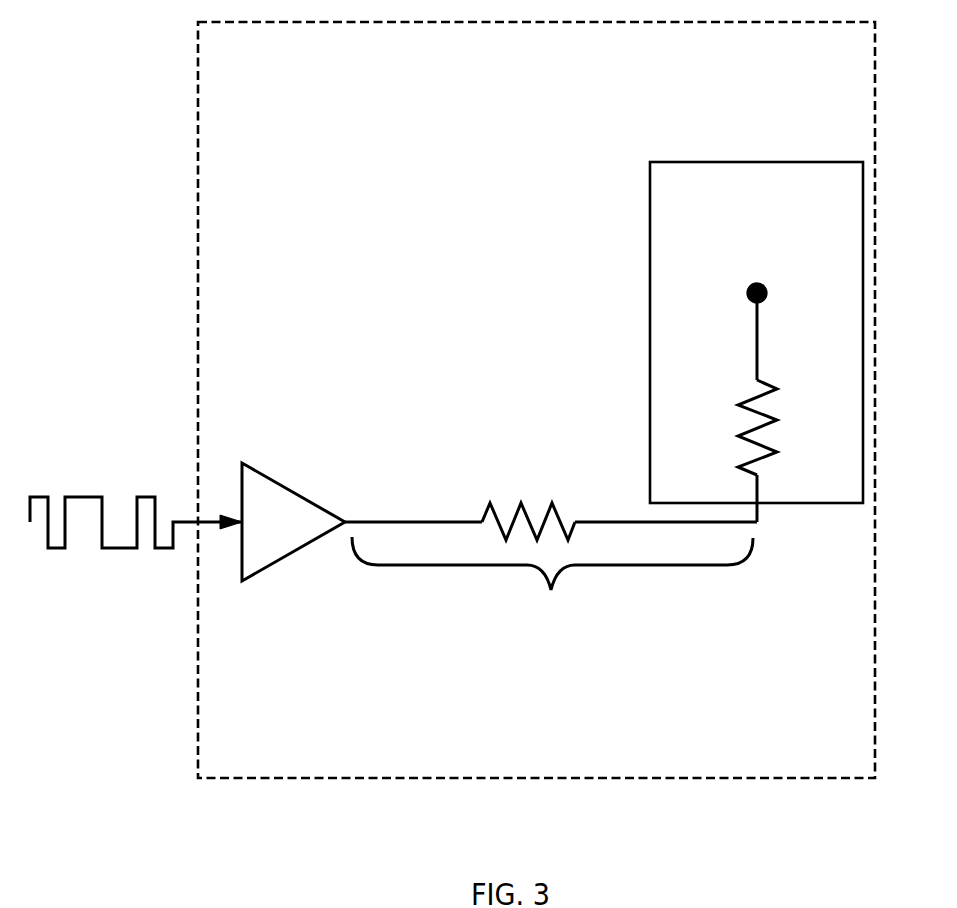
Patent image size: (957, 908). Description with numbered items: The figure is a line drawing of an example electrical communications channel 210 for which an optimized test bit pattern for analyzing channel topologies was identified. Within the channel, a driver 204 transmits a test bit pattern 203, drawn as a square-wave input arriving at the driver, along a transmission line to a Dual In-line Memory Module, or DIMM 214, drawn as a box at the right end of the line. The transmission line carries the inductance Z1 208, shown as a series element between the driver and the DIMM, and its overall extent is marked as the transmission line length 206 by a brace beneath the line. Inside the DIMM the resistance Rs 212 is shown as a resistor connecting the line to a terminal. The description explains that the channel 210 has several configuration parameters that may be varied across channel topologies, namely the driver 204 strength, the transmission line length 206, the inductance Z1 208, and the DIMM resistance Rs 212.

The test bit pattern 203 is at (119, 622).
The driver 204 is at (290, 544).
The transmission line length 206 is at (565, 647).
The inductance Z1 208 is at (539, 487).
The electrical communications channel 210 is at (555, 49).
The DIMM resistance Rs 212 is at (730, 451).
The dual in-line memory module (DIMM) 214 is at (773, 247).